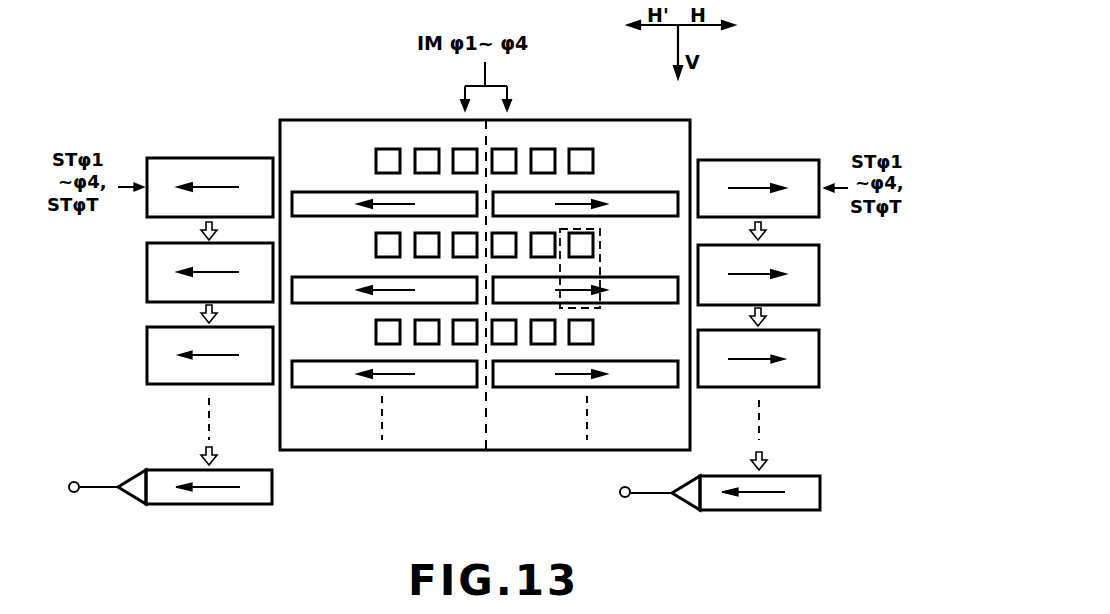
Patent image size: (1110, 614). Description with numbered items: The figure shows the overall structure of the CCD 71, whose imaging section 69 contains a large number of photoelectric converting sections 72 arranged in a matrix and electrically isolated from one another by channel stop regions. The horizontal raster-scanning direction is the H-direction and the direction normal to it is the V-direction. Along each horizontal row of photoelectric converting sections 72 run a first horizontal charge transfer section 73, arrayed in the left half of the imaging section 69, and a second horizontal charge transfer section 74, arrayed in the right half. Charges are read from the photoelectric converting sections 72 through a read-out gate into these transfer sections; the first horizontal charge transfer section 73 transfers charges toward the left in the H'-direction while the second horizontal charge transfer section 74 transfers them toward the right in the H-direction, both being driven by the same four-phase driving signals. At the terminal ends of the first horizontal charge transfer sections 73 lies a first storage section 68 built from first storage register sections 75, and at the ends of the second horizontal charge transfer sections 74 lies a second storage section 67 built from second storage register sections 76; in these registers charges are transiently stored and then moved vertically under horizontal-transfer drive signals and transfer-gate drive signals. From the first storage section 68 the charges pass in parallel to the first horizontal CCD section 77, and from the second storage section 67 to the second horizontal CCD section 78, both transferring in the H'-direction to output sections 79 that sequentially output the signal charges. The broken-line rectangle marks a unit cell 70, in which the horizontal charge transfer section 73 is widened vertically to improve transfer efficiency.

The second storage section 67 is at (830, 396).
The first storage section 68 is at (152, 397).
The imaging section 69 is at (603, 120).
The unit cell 70 is at (600, 266).
The CCD 71 is at (798, 57).
The photoelectric converting sections 72 is at (425, 162).
The first horizontal charge transfer section 73 is at (318, 278).
The second horizontal charge transfer section 74 is at (648, 290).
The first storage register sections 75 is at (245, 253).
The second storage register sections 76 is at (800, 210).
The first horizontal CCD section 77 is at (182, 502).
The second horizontal CCD section 78 is at (753, 502).
The output sections 79 is at (138, 492).